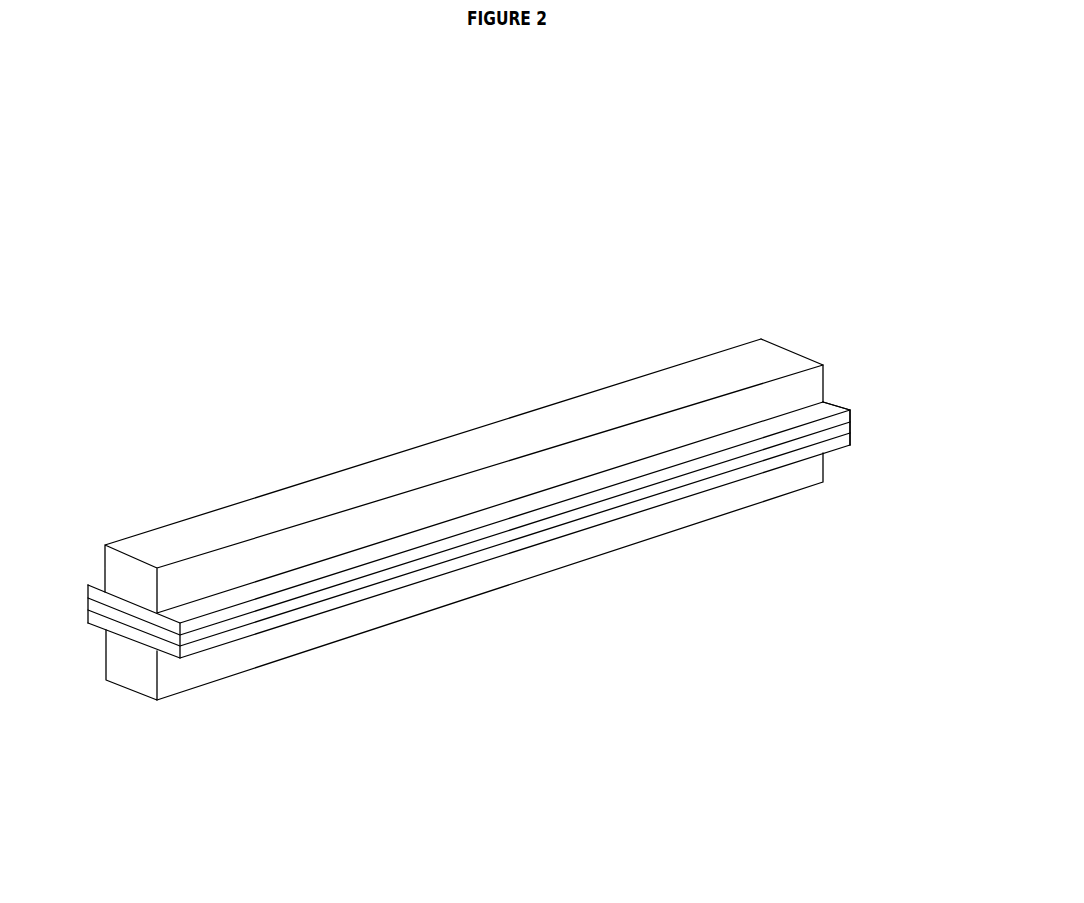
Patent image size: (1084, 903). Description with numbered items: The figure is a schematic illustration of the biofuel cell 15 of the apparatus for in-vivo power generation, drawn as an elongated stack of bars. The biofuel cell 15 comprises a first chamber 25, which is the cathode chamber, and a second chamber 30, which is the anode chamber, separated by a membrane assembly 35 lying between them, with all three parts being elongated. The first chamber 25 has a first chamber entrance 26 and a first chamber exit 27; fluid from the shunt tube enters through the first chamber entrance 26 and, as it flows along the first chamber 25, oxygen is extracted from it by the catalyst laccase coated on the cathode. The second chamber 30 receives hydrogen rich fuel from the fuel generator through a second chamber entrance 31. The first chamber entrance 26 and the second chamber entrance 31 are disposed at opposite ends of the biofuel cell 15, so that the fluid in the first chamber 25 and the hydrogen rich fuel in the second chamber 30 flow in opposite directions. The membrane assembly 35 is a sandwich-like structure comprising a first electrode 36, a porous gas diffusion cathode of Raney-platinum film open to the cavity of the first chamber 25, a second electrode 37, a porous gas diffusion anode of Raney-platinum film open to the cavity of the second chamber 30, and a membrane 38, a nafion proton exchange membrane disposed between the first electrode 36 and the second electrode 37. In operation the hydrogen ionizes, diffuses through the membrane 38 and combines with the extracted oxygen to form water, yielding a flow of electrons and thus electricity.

The biofuel cell 15 is at (398, 289).
The first chamber 25 is at (272, 513).
The first chamber entrance 26 is at (826, 380).
The first chamber exit 27 is at (120, 577).
The second chamber 30 is at (470, 598).
The second chamber entrance 31 is at (133, 672).
The membrane assembly 35 is at (879, 407).
The first electrode 36 is at (553, 515).
The second electrode 37 is at (565, 528).
The membrane 38 is at (673, 487).